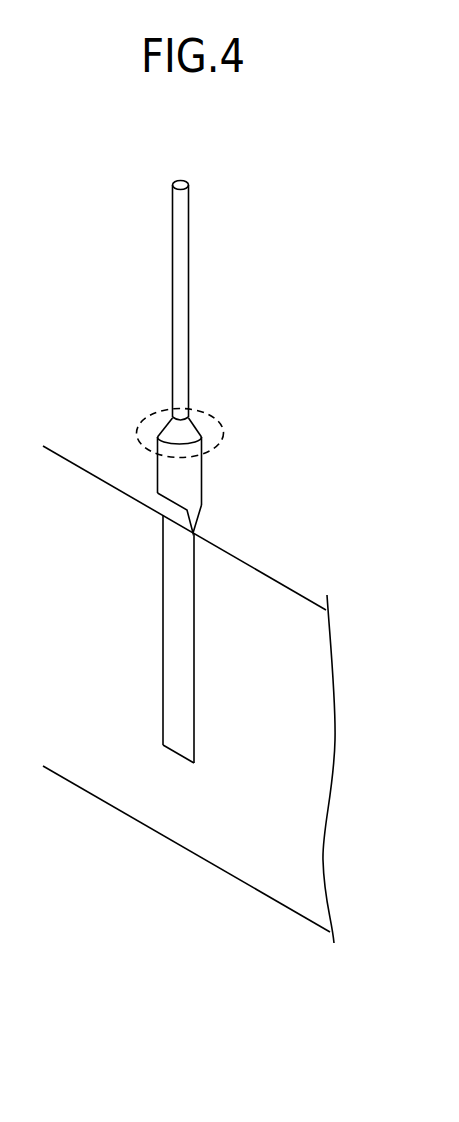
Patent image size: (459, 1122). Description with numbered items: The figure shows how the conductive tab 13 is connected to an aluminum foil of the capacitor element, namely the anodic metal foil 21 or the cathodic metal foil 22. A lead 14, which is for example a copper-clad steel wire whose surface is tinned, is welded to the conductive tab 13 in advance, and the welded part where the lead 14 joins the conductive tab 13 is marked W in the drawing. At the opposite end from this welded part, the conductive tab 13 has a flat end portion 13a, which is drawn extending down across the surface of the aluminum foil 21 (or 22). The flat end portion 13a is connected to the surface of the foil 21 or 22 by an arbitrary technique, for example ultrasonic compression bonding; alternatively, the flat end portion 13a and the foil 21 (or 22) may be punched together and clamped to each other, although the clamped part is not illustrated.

The lead 14 is at (183, 200).
The weld portion W is at (210, 415).
The conductive tab 13 is at (190, 484).
The flat end portion 13a is at (170, 577).
The anodic metal foil 21 is at (193, 694).
The cathodic metal foil 22 is at (255, 567).